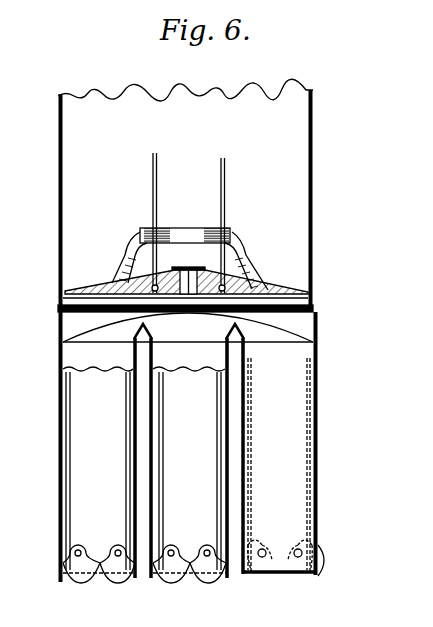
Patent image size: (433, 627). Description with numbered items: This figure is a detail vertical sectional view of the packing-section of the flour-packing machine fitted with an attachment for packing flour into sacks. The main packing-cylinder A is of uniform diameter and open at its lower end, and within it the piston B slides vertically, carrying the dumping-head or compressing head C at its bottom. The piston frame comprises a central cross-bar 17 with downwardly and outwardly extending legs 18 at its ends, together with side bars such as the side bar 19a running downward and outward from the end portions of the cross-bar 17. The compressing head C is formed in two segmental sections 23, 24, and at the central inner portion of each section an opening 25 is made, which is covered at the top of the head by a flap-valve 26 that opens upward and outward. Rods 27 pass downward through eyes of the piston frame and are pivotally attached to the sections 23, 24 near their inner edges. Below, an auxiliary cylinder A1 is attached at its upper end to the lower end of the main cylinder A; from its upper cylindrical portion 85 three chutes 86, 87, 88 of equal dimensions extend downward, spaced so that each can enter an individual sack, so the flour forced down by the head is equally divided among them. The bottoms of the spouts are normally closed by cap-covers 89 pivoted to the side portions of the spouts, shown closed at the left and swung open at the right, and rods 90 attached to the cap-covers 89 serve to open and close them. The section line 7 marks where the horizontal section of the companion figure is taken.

The packing-cylinder A is at (313, 184).
The auxiliary cylinder A1 is at (318, 336).
The piston B is at (186, 179).
The dumping-head C is at (292, 287).
The section line 7 7 is at (54, 461).
The central cross-bar 17 is at (185, 235).
The legs 18 is at (125, 254).
The side bar 19a is at (150, 228).
The segmental section 23 is at (101, 290).
The segmental section 24 is at (273, 297).
The opening 25 is at (197, 296).
The flap-valve 26 is at (190, 270).
The rods 27 is at (152, 180).
The upper cylindrical portion 85 is at (118, 327).
The chute 86 is at (104, 379).
The chute 87 is at (200, 379).
The chute 88 is at (283, 476).
The cap-covers 89 is at (245, 575).
The rods 90 is at (126, 439).